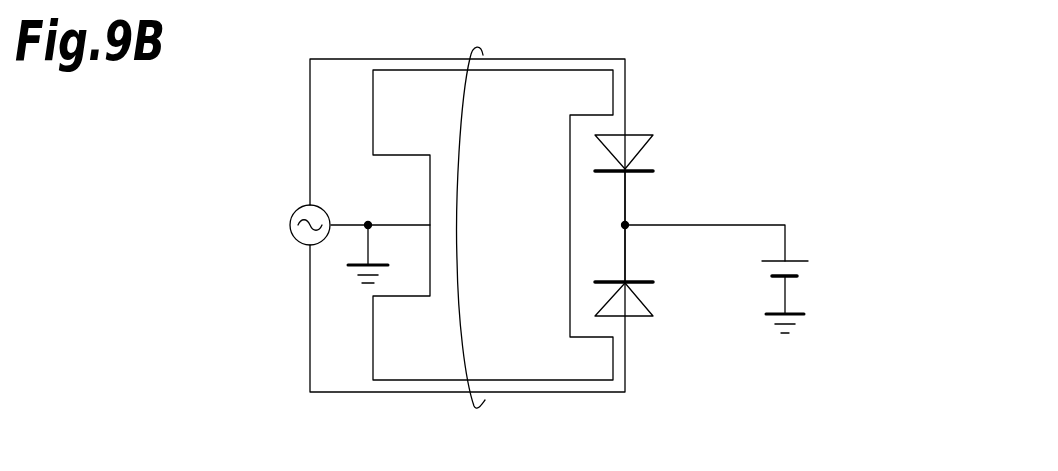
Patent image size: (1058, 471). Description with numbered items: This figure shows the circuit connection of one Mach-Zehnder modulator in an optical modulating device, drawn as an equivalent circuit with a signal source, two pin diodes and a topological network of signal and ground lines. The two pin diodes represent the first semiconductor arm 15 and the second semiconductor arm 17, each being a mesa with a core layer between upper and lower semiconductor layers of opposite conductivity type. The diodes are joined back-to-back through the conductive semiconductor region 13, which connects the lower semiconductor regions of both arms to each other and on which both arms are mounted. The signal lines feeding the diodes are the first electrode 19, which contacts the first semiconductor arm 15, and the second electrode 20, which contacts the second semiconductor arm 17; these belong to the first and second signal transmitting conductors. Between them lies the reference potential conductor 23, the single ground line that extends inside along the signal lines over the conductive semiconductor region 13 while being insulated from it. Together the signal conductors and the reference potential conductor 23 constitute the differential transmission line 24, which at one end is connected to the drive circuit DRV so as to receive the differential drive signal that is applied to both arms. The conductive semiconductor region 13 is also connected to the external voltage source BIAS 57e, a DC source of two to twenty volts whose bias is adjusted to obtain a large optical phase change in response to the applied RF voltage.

The conductive semiconductor region 13 is at (628, 222).
The first semiconductor arm 15 is at (648, 149).
The second semiconductor arm 17 is at (648, 300).
The first electrode 19 is at (628, 88).
The second electrode 20 is at (628, 357).
The reference potential conductor 23 is at (518, 226).
The differential transmission line 24 is at (469, 52).
The external voltage source BIAS 57e is at (795, 258).
The drive circuit DRV is at (292, 218).